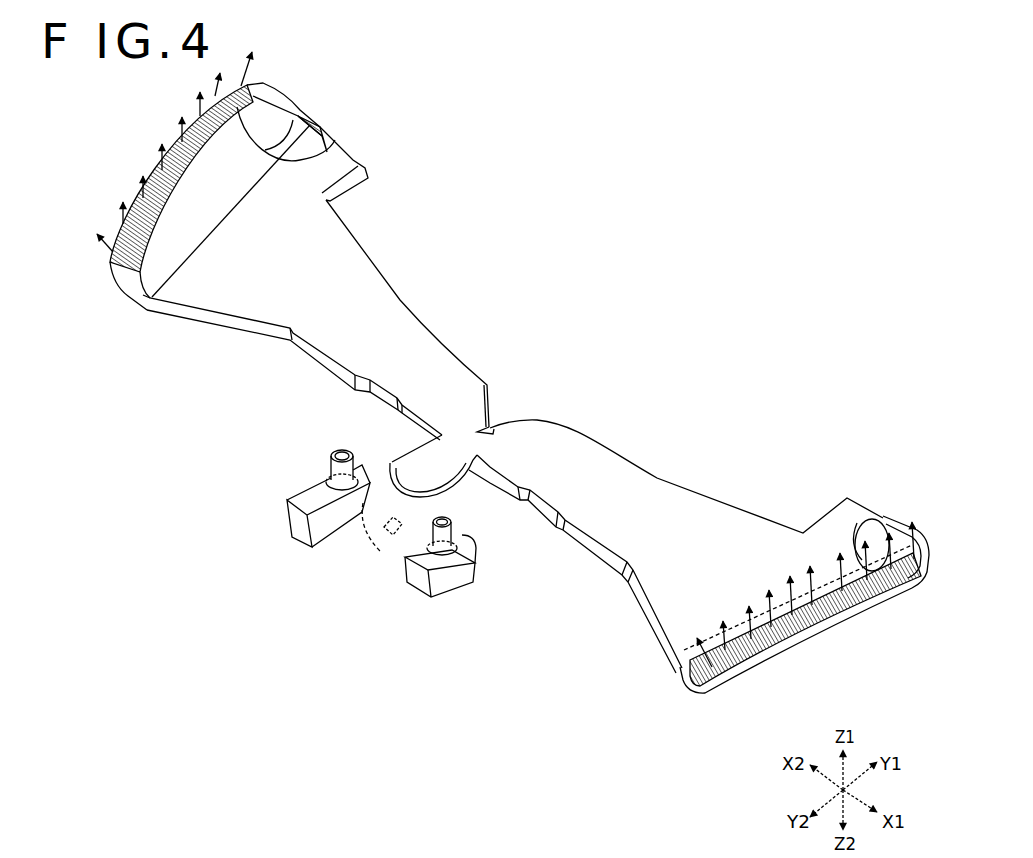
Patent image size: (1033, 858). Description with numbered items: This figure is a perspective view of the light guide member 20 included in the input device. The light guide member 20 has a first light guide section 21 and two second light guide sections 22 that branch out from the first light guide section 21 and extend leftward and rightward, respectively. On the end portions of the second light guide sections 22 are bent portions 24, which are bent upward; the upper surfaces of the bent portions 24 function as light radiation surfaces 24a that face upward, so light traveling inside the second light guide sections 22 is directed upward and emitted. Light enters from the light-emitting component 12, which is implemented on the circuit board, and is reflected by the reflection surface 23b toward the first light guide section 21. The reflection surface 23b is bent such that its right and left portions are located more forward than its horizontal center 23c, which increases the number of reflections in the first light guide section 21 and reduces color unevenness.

The light guide member 20 is at (630, 402).
The first light guide section 21 is at (407, 476).
The second light guide sections 22 is at (395, 328).
The bent portions 24 is at (153, 272).
The light radiation surfaces 24a is at (145, 206).
The reflection surface 23b is at (366, 502).
The horizontal center 23c is at (370, 507).
The light-emitting component 12 is at (386, 536).